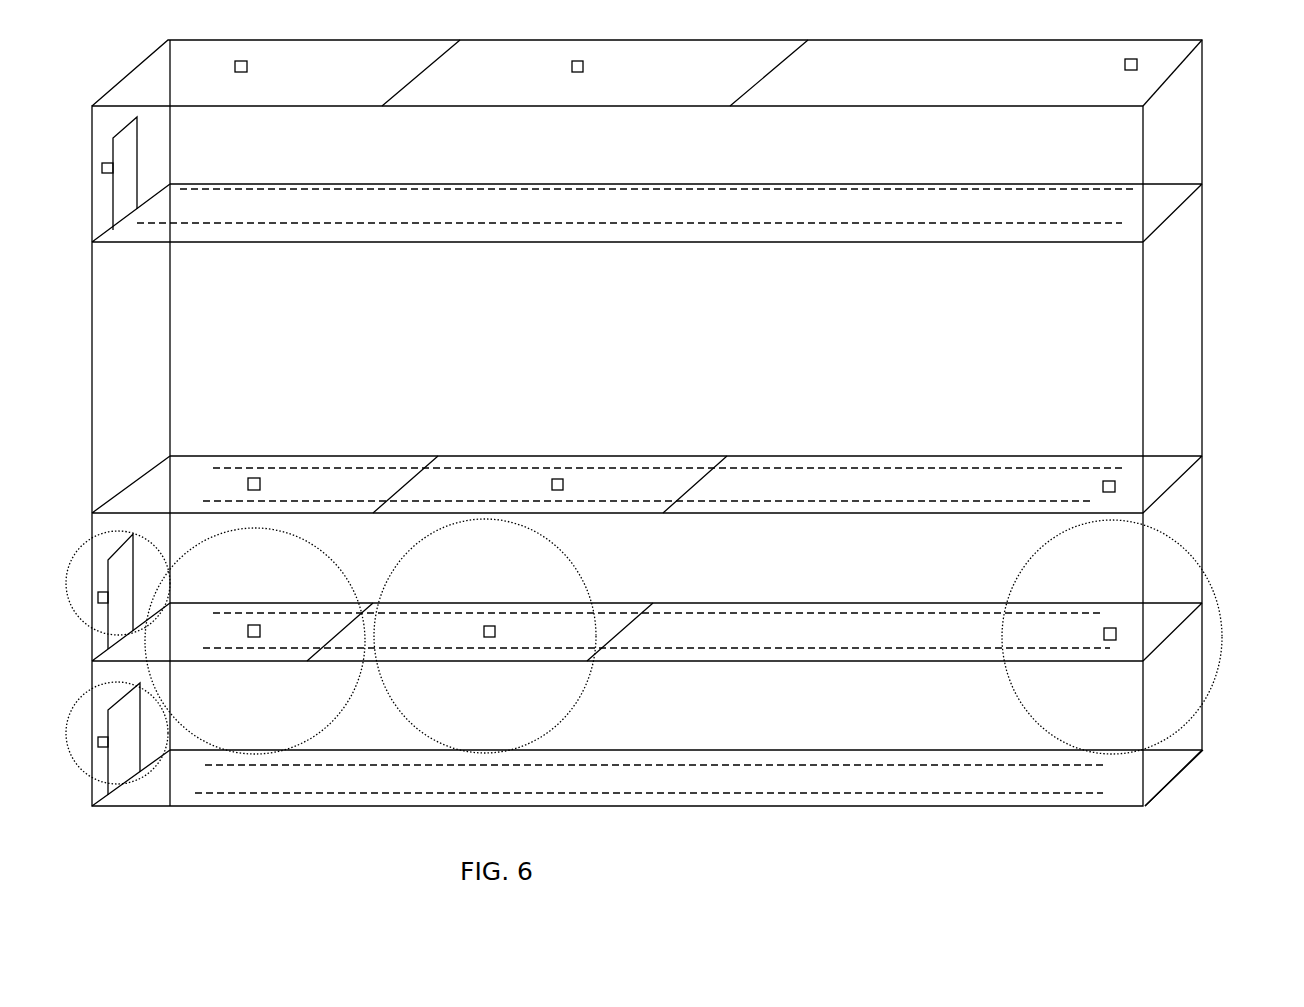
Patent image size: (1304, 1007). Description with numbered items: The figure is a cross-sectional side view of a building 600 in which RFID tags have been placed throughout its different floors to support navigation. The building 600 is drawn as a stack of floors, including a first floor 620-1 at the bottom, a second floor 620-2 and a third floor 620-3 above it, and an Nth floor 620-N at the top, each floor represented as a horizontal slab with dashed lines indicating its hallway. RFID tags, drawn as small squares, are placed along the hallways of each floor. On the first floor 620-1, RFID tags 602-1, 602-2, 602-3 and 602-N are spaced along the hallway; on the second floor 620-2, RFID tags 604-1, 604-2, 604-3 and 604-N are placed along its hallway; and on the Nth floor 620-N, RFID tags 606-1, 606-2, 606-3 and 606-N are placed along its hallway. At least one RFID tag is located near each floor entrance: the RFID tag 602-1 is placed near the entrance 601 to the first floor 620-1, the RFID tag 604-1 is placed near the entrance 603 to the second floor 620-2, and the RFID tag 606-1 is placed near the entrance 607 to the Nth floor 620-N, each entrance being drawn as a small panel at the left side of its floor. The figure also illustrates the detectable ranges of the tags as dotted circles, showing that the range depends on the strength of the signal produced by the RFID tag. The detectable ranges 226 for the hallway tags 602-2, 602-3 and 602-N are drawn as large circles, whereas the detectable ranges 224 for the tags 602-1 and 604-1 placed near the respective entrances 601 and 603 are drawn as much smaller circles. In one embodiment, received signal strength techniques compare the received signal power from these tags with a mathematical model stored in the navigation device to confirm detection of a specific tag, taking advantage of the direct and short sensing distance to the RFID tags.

The building 600 is at (889, 823).
The Nth floor 620-N is at (1178, 196).
The third floor 620-3 is at (1167, 475).
The second floor 620-2 is at (1173, 613).
The first floor 620-1 is at (1167, 768).
The detectable range 224 is at (103, 537).
The detectable range 226 is at (410, 720).
The entrance 607 is at (127, 143).
The RFID tag 606-1 is at (108, 168).
The RFID tag 606-2 is at (247, 63).
The RFID tag 606-3 is at (583, 61).
The RFID tag 606-N is at (1130, 59).
The entrance 603 is at (123, 575).
The RFID tag 604-1 is at (108, 597).
The RFID tag 604-2 is at (258, 490).
The RFID tag 604-3 is at (558, 490).
The RFID tag 604-N is at (1113, 491).
The entrance 601 is at (137, 772).
The RFID tag 602-1 is at (108, 740).
The RFID tag 602-2 is at (254, 637).
The RFID tag 602-3 is at (497, 633).
The RFID tag 602-N is at (1104, 634).